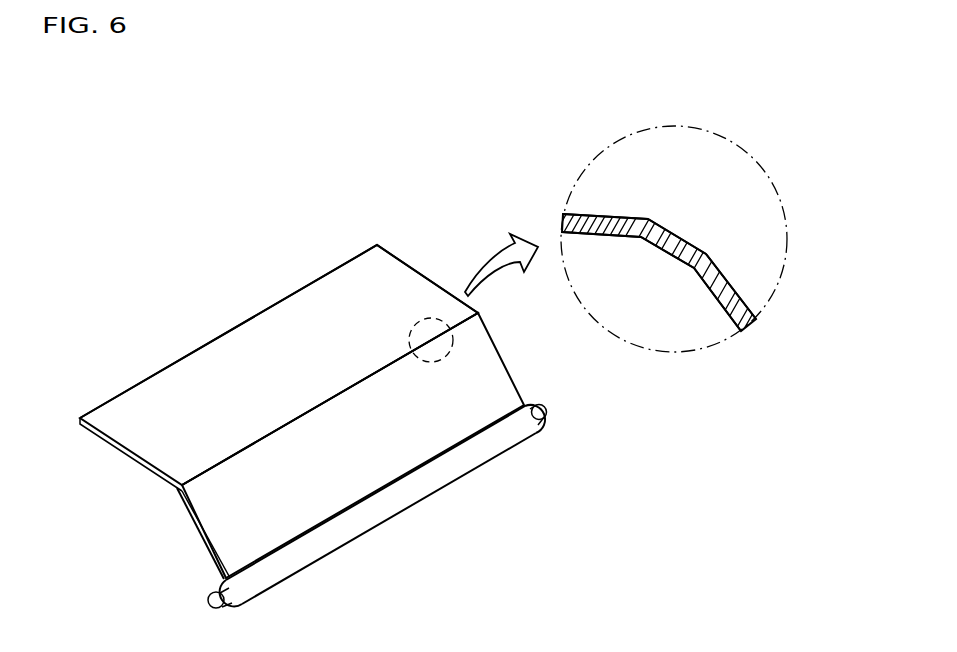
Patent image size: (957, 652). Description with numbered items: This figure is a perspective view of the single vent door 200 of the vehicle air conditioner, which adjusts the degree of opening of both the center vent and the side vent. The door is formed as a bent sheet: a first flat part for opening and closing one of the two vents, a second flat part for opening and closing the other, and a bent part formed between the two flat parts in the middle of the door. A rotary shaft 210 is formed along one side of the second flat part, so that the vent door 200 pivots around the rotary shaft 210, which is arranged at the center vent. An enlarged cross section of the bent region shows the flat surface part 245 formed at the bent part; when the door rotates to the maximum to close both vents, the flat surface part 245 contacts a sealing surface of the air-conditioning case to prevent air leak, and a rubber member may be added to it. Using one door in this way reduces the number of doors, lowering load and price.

The vent door 200 is at (408, 240).
The rotary shaft 210 is at (547, 428).
The flat surface part 245 is at (672, 246).